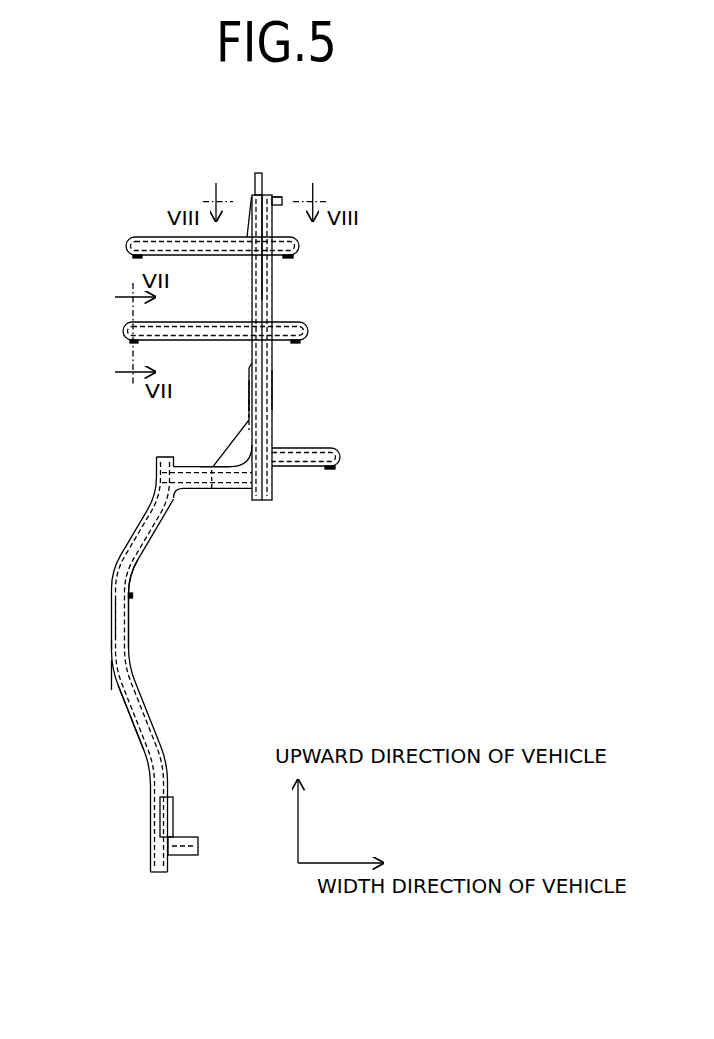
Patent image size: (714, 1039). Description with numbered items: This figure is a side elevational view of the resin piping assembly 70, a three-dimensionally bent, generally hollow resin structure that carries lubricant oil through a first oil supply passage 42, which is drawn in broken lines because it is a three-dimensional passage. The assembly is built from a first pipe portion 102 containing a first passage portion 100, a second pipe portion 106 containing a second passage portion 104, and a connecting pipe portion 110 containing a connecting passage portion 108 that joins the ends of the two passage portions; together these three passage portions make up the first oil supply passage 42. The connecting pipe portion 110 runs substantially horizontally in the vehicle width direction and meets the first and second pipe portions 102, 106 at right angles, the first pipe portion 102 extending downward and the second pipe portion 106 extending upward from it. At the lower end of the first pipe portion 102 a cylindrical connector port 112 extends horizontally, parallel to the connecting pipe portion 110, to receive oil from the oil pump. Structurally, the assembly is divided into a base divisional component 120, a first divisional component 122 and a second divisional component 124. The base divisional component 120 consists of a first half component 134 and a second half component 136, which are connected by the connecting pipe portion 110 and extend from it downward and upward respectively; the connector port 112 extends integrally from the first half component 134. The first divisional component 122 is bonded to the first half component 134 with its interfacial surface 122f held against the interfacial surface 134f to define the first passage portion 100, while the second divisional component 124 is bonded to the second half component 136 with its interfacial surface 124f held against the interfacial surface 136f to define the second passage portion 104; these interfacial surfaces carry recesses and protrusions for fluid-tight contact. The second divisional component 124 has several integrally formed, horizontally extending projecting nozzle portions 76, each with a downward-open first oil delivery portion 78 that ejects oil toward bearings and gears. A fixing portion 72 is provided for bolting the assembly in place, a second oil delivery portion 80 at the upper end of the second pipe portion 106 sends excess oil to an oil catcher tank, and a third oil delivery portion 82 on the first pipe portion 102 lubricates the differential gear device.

The first oil supply passage 42 is at (141, 760).
The resin piping assembly 70 is at (394, 235).
The fixing portion 72 is at (257, 172).
The projecting nozzle portion 76 is at (160, 245).
The first oil delivery portion 78 is at (137, 257).
The second oil delivery portion 80 is at (275, 197).
The third oil delivery portion 82 is at (133, 595).
The first passage portion 100 is at (147, 703).
The first pipe portion 102 is at (96, 700).
The second passage portion 104 is at (247, 417).
The second pipe portion 106 is at (332, 176).
The connecting passage portion 108 is at (212, 488).
The connecting pipe portion 110 is at (238, 514).
The connector port 112 is at (187, 856).
The base divisional component 120 is at (192, 475).
The first divisional component 122 is at (137, 542).
The interfacial surface 122f is at (120, 620).
The second divisional component 124 is at (268, 280).
The interfacial surface 124f is at (258, 400).
The first half component 134 is at (138, 558).
The interfacial surface 134f is at (118, 656).
The second half component 136 is at (257, 362).
The interfacial surface 136f is at (262, 295).